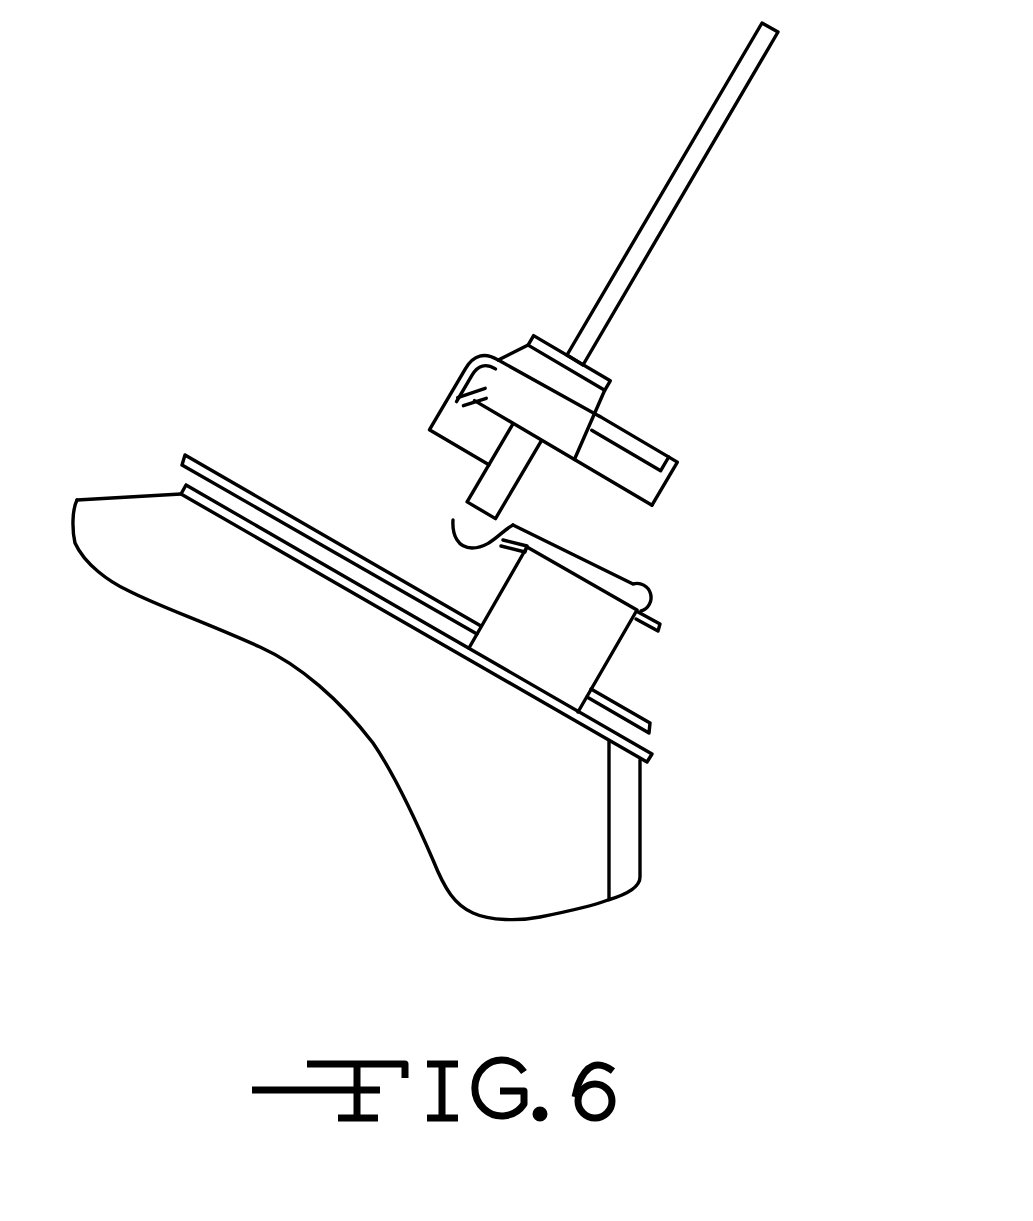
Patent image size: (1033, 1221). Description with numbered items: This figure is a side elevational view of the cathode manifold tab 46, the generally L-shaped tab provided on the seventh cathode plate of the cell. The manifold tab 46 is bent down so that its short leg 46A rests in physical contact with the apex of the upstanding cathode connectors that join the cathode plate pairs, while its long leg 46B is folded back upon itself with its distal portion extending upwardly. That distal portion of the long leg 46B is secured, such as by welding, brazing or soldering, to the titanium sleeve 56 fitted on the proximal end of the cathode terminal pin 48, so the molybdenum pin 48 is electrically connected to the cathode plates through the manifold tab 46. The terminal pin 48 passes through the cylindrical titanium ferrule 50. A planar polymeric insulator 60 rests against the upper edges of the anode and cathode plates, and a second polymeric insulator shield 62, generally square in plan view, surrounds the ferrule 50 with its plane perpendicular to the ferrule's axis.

The manifold tab 46 is at (573, 647).
The short leg of manifold tab 46A is at (625, 573).
The long leg of manifold tab 46B is at (455, 537).
The cathode terminal pin 48 is at (675, 205).
The ferrule 50 is at (612, 401).
The titanium sleeve 56 is at (497, 470).
The planar polymeric insulator 60 is at (206, 462).
The polymeric insulator shield 62 is at (678, 456).